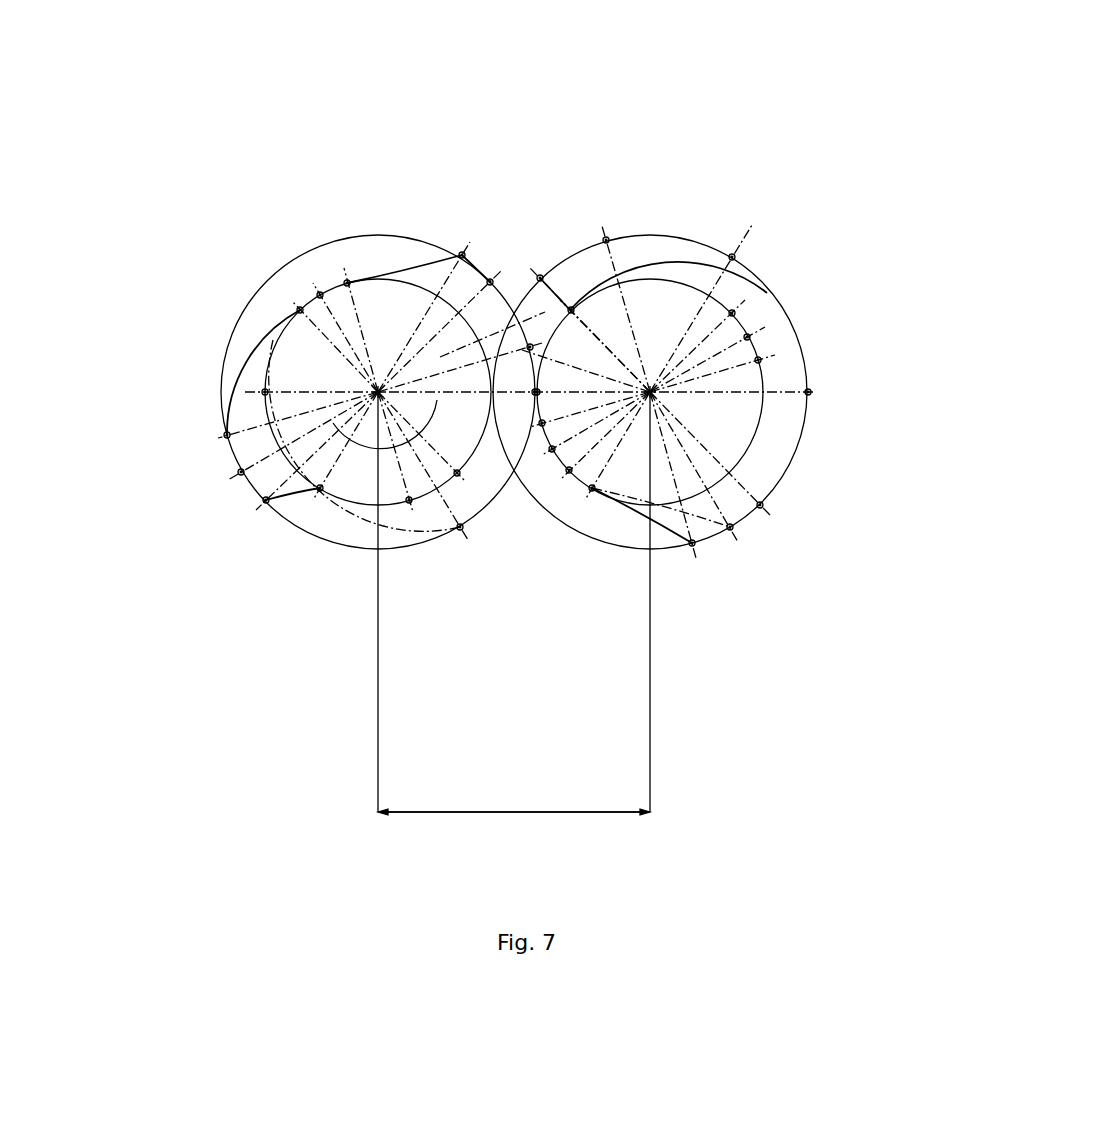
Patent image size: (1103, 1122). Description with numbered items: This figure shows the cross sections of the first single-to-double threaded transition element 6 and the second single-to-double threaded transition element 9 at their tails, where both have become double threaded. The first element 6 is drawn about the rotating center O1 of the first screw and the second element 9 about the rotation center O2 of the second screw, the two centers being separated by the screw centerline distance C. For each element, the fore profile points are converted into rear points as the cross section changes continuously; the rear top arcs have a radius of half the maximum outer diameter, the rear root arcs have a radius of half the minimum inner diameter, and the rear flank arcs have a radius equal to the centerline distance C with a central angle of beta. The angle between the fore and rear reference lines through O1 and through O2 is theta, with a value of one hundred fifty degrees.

The second single-to-double threaded transition element 9 is at (260, 373).
The first single-to-double threaded transition element 6 is at (790, 377).
The screw centerline distance C is at (514, 794).
The rotating center of the first screw O1 is at (660, 395).
The rotation center of the second screw O2 is at (361, 395).